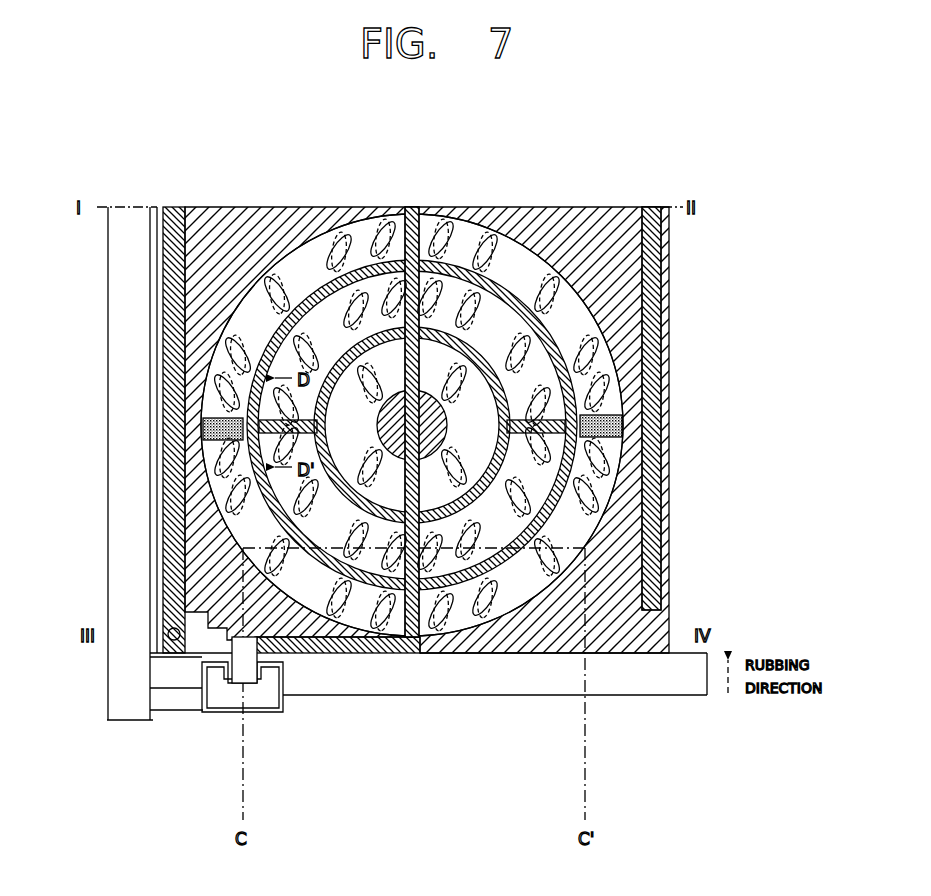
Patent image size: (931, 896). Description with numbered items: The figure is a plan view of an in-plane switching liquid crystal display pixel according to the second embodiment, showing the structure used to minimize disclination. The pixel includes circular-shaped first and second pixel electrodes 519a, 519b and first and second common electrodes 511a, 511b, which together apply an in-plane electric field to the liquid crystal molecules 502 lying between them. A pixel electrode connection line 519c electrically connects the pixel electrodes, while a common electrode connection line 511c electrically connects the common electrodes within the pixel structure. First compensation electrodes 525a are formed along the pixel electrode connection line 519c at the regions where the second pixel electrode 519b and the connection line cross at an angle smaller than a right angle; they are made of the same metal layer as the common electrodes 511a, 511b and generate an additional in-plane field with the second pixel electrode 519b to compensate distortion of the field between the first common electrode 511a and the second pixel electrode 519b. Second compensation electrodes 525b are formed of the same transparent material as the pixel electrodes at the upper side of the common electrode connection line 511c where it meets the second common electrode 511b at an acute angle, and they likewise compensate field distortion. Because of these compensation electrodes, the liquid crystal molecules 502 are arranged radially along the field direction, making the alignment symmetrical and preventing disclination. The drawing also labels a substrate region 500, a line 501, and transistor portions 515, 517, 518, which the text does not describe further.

The substrate 500 is at (107, 270).
The gate line 501 is at (362, 682).
The liquid crystal molecules 502 is at (358, 268).
The first common electrode 511a is at (483, 497).
The second common electrode 511b is at (617, 560).
The common electrode connection line 511c is at (540, 433).
The gate electrode 515 is at (203, 678).
The source electrode 517 is at (216, 684).
The drain electrode 518 is at (254, 684).
The first pixel electrode 519a is at (437, 417).
The second pixel electrode 519b is at (420, 353).
The pixel electrode connection line 519c is at (528, 293).
The first compensation electrode 525a is at (443, 248).
The second compensation electrode 525b is at (203, 418).